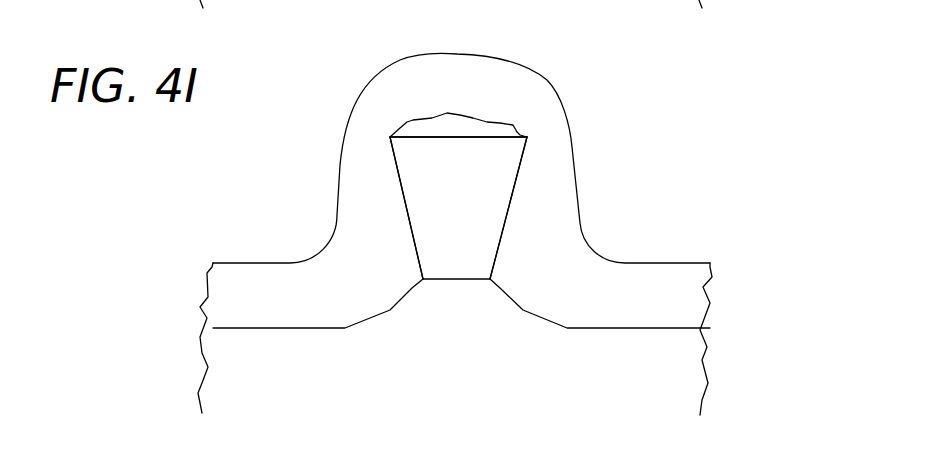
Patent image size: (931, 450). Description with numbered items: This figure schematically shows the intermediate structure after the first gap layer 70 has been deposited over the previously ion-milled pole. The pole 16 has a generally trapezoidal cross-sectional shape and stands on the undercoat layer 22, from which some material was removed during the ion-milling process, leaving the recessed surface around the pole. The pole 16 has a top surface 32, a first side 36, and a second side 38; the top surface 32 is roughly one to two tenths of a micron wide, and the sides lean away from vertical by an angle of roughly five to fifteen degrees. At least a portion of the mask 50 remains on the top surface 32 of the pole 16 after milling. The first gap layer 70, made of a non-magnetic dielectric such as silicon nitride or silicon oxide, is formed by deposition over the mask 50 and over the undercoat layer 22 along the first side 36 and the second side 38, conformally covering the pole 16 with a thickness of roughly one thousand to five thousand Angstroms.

The pole 16 is at (485, 177).
The undercoat layer 22 is at (650, 362).
The top surface 32 is at (425, 137).
The first side 36 is at (403, 210).
The second side 38 is at (503, 235).
The mask 50 is at (454, 125).
The first gap layer 70 is at (373, 115).